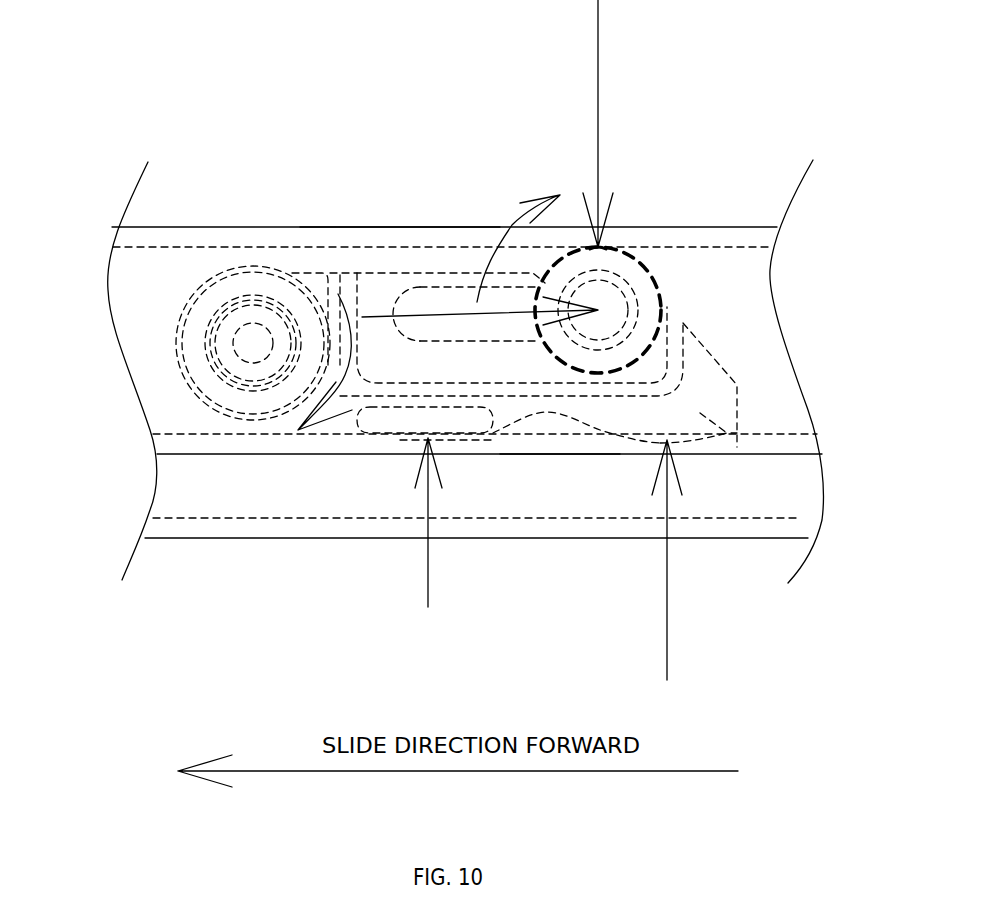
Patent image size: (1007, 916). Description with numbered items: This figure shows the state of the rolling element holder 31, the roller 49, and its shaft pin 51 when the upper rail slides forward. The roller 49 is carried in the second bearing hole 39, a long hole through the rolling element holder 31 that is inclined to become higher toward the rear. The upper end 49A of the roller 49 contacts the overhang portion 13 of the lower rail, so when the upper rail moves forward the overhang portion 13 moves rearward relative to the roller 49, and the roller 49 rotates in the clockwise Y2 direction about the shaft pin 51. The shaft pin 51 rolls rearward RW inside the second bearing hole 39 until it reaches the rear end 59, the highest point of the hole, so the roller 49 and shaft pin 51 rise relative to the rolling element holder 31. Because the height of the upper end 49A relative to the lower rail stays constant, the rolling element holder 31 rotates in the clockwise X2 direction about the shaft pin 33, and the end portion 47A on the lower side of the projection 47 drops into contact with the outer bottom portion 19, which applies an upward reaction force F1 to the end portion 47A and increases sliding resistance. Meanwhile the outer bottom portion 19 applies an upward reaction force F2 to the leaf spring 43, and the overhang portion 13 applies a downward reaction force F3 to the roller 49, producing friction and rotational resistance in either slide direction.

The overhang portion 13 is at (730, 237).
The outer bottom portion 19 is at (553, 443).
The rolling element holder 31 is at (737, 390).
The shaft pin 33 is at (208, 338).
The second bearing hole 39 is at (453, 338).
The leaf spring 43 is at (393, 437).
The projection 47 is at (737, 437).
The end portion 47A is at (680, 437).
The roller 49 is at (650, 262).
The upper end 49A is at (588, 249).
The shaft pin 51 is at (660, 288).
The rear end 59 is at (667, 307).
The upward reaction force F1 is at (668, 640).
The upward reaction force F2 is at (429, 567).
The downward reaction force F3 is at (600, 53).
The rearward direction RW is at (383, 317).
The X2 direction X2 is at (352, 393).
The Y2 direction Y2 is at (515, 220).